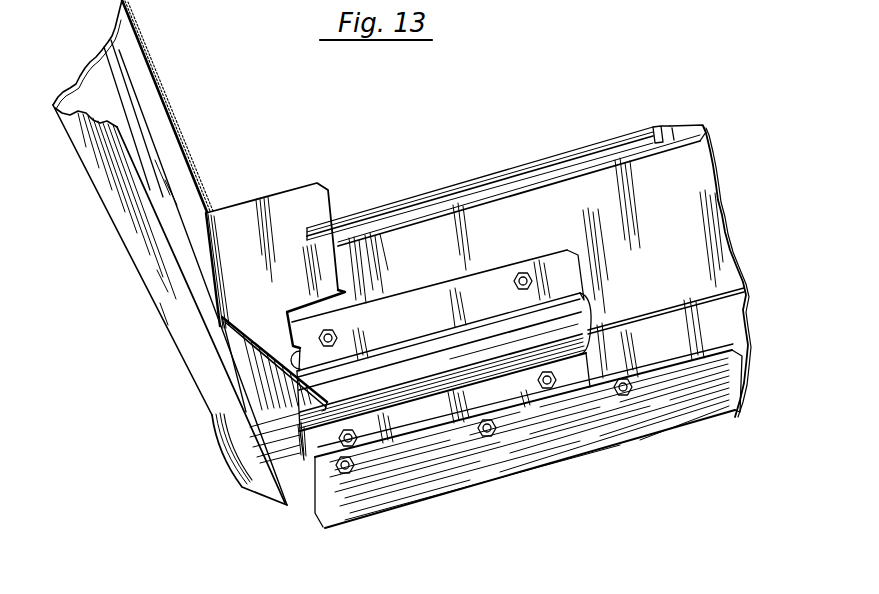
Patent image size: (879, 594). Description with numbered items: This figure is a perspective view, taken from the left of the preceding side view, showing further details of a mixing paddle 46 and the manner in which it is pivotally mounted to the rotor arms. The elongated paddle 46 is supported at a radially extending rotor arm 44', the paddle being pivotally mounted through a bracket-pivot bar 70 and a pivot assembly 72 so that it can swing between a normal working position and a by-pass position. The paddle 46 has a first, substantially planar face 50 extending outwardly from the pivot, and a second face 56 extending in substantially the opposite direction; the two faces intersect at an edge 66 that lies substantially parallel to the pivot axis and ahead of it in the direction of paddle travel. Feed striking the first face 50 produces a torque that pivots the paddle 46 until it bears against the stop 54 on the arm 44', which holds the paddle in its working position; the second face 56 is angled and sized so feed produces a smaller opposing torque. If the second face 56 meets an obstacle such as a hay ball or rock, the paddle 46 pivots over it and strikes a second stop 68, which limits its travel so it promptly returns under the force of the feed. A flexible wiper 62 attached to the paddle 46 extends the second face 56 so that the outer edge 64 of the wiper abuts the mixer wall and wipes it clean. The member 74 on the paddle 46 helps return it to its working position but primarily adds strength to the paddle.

The rotor arm 44' is at (170, 252).
The mixing paddle 46 is at (651, 104).
The first face 50 is at (720, 172).
The stop 54 is at (290, 190).
The second face 56 is at (748, 330).
The flexible wiper 62 is at (508, 450).
The outer edge of wiper 64 is at (643, 438).
The edge 66 is at (748, 282).
The second stop 68 is at (257, 374).
The bracket-pivot bar 70 is at (403, 370).
The pivot assembly 72 is at (297, 460).
The member 74 is at (437, 190).